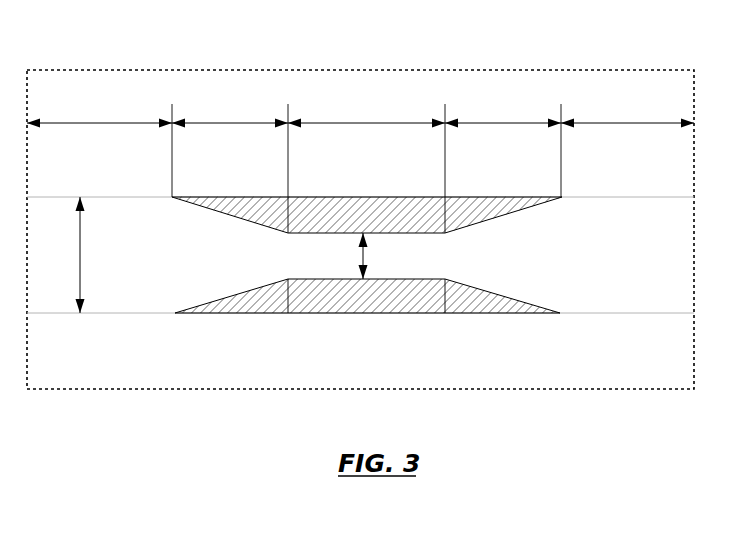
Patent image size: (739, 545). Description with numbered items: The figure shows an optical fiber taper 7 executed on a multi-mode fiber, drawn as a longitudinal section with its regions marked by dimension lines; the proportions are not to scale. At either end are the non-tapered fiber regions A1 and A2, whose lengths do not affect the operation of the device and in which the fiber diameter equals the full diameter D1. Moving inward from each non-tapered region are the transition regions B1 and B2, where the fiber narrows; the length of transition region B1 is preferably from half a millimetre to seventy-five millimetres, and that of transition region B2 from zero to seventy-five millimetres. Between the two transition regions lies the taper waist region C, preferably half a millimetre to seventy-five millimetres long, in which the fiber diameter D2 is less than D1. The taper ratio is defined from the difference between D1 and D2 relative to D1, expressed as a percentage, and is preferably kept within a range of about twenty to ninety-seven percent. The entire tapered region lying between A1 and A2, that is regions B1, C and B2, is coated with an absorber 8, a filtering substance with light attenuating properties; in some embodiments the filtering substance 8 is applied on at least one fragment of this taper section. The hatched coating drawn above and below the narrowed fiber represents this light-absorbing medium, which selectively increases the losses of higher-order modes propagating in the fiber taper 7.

The optical fiber taper 7 is at (497, 70).
The absorber 8 is at (358, 208).
The non-tapered fiber region A1 is at (99, 115).
The transition region B1 is at (230, 115).
The taper waist region C is at (366, 115).
The transition region B2 is at (503, 115).
The non-tapered fiber region A2 is at (627, 115).
The fiber diameter D1 is at (92, 255).
The taper waist diameter D2 is at (375, 256).